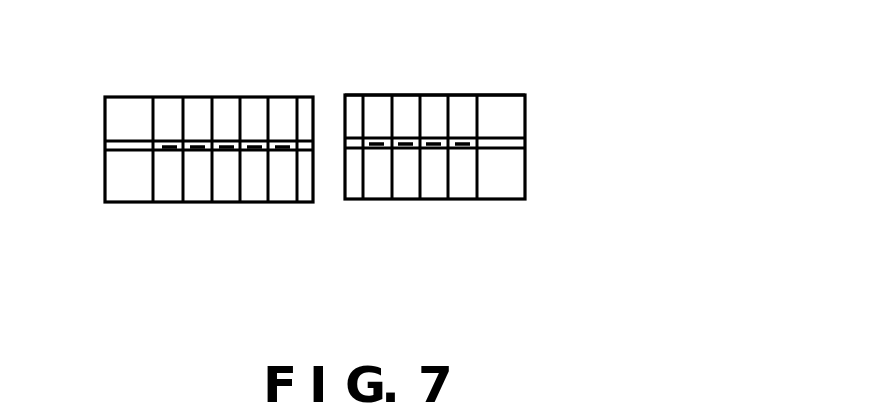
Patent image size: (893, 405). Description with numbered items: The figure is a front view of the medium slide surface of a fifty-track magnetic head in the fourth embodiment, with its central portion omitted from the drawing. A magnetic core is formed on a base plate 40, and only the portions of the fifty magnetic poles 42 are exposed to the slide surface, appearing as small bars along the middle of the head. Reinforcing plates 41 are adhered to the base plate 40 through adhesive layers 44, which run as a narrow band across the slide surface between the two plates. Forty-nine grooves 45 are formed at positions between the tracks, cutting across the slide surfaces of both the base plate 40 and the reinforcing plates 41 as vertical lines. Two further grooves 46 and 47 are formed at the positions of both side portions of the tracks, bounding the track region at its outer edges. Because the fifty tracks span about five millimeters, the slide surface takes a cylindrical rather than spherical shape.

The base plate 40 is at (507, 175).
The reinforcing plate 41 is at (508, 122).
The magnetic pole 42 is at (282, 146).
The adhesive layer 44 is at (105, 145).
The groove 45 is at (183, 106).
The groove 46 is at (477, 110).
The groove 47 is at (153, 113).